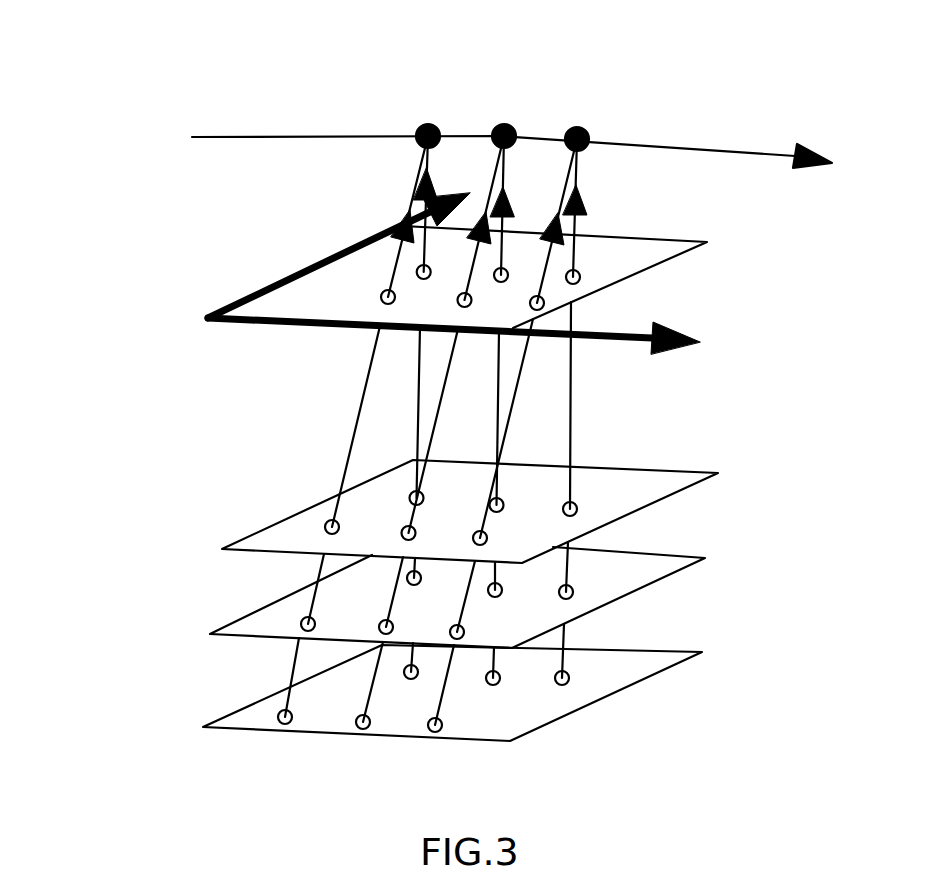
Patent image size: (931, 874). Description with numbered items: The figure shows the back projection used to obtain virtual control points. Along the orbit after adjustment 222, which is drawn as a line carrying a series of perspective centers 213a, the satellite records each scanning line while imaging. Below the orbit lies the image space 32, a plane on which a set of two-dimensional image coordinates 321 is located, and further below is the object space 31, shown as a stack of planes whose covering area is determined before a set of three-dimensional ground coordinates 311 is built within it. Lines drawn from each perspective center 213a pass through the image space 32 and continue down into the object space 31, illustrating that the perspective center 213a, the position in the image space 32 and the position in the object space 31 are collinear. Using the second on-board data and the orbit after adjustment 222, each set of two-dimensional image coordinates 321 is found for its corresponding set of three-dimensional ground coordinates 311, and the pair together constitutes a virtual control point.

The orbit after adjustment 222 is at (192, 137).
The perspective center 213a is at (428, 128).
The image space 32 is at (692, 294).
The set of 2D image coordinates 321 is at (381, 296).
The object space 31 is at (740, 602).
The set of 3D ground coordinates 311 is at (280, 713).